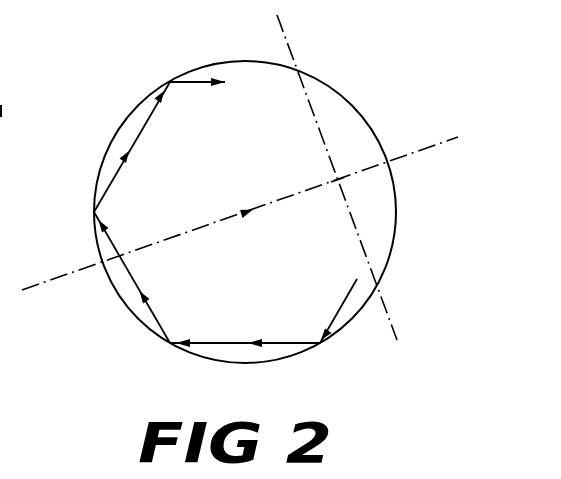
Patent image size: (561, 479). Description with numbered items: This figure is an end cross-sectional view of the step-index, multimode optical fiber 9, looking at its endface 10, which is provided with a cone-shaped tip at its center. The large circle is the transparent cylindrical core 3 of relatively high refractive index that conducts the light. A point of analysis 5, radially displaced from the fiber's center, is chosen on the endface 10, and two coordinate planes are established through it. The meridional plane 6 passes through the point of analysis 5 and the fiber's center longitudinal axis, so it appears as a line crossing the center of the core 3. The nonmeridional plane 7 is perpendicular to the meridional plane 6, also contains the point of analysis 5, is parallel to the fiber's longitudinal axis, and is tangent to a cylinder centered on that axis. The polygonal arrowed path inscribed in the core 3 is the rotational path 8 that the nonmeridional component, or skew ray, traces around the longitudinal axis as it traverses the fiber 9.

The core 3 is at (119, 128).
The point of analysis 5 is at (336, 179).
The meridional plane 6 is at (404, 157).
The nonmeridional plane 7 is at (389, 314).
The rotational path 8 is at (223, 343).
The optical fiber 9 is at (159, 46).
The endface 10 is at (246, 209).